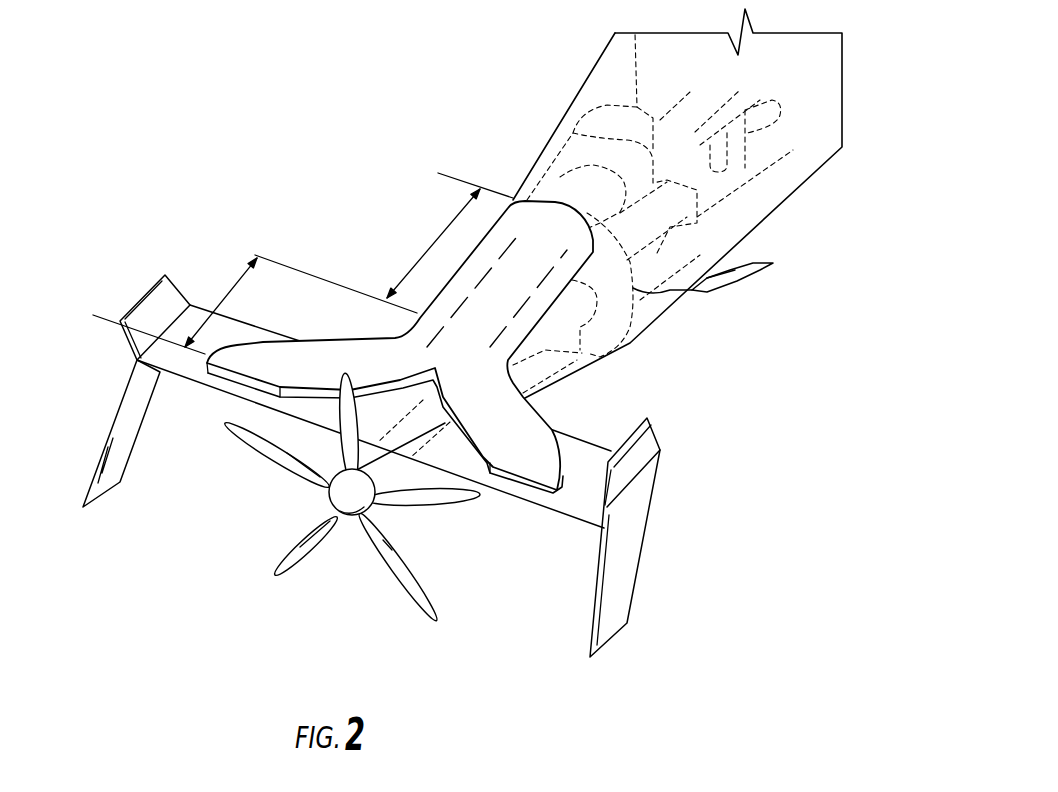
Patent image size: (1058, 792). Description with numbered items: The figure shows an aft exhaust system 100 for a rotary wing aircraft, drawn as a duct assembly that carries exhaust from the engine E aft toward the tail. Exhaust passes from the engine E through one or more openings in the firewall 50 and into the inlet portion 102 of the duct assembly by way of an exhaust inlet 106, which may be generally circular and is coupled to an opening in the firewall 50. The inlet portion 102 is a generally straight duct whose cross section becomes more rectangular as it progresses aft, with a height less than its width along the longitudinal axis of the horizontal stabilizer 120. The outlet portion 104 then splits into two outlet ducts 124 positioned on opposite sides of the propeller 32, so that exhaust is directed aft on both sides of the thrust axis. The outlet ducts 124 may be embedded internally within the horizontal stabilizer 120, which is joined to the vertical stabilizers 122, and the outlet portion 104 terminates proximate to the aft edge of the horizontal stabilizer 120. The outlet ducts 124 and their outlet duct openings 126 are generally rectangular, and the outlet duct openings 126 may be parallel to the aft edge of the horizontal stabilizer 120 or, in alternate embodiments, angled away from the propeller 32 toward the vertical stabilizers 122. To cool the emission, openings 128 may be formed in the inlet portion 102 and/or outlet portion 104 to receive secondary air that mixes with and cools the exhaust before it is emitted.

The propeller 32 is at (330, 524).
The firewall 50 is at (633, 288).
The aft exhaust system 100 is at (535, 364).
The inlet portion 102 is at (420, 257).
The outlet portion 104 is at (224, 292).
The exhaust inlet 106 is at (582, 216).
The horizontal stabilizer 120 is at (578, 507).
The vertical stabilizers 122 is at (623, 557).
The outlet ducts 124 is at (241, 365).
The outlet duct openings 126 is at (506, 477).
The openings 128 is at (543, 283).
The engine E is at (578, 172).